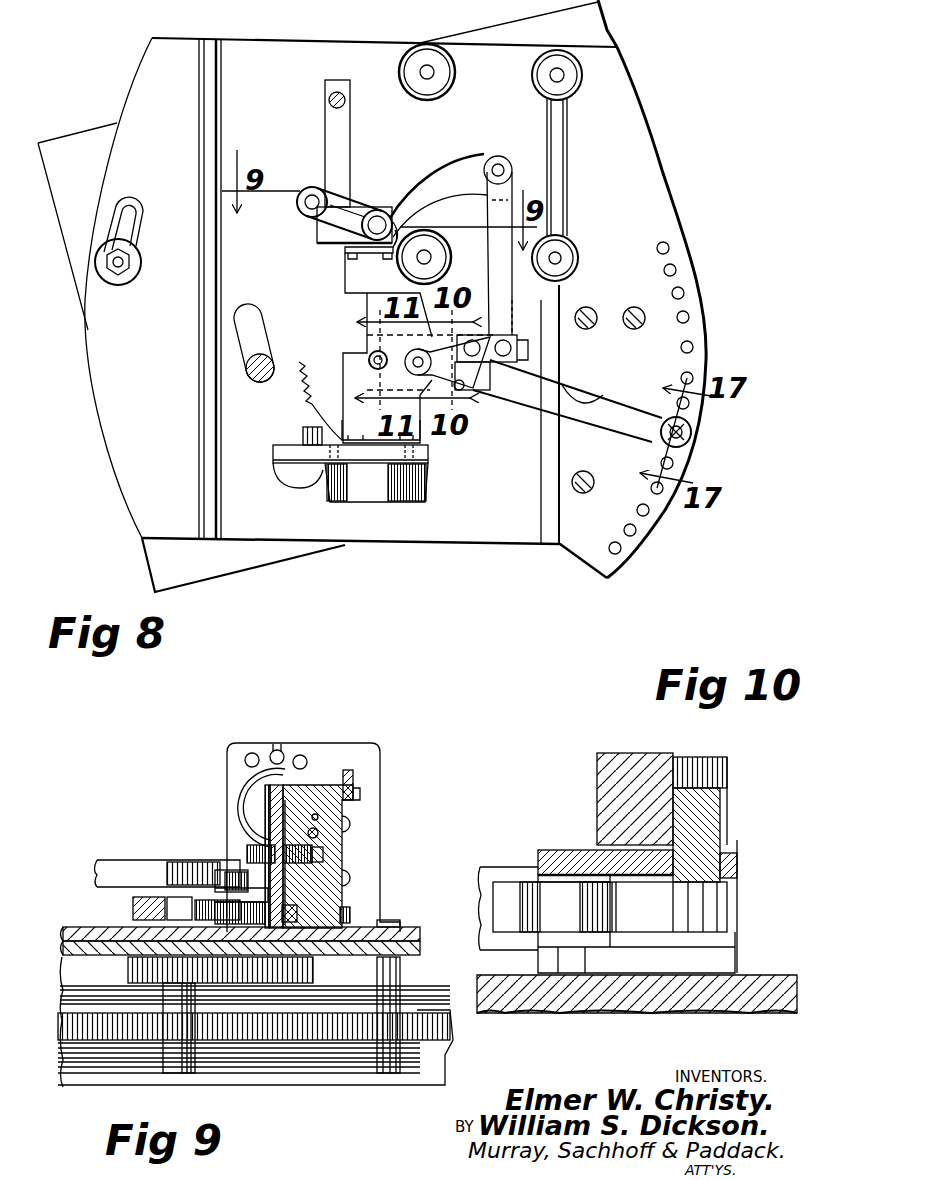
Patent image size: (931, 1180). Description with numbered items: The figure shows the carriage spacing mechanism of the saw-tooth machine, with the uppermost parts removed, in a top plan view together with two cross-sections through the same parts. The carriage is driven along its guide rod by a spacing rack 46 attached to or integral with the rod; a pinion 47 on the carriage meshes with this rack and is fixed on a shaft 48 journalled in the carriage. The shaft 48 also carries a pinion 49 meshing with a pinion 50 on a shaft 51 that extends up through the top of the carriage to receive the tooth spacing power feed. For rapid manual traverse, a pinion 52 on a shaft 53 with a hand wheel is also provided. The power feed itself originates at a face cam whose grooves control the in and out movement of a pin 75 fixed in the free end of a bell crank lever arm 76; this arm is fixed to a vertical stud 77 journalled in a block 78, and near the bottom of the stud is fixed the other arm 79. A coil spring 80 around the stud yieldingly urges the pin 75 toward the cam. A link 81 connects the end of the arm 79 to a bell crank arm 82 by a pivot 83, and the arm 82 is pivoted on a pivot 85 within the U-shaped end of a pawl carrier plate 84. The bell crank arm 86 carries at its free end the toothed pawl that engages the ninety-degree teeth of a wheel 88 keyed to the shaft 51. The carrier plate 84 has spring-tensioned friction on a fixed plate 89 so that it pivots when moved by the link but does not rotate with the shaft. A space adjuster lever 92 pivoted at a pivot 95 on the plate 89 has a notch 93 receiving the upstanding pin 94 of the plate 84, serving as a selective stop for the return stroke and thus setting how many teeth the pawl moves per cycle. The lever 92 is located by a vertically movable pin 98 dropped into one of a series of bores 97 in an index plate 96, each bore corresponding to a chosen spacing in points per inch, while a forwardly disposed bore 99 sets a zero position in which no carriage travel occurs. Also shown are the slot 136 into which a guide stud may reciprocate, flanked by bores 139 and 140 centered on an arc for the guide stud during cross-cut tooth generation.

In FIG. 9, the spacing rack 46 is at (72, 1014).
In FIG. 9, the pinion 47 is at (165, 1035).
In FIG. 9, the shaft 48 is at (197, 1063).
In FIG. 9, the pinion 49 is at (128, 975).
In FIG. 9, the pinion 50 is at (315, 973).
In FIG. 8, the shaft 51 is at (375, 353).
In FIG. 9, the pinion 52 is at (397, 1053).
In FIG. 8, the shaft 53 is at (263, 355).
In FIG. 9, the shaft 53 is at (398, 982).
In FIG. 8, the pin 75 is at (313, 193).
In FIG. 9, the pin 75 is at (350, 772).
In FIG. 8, the bell crank lever arm 76 is at (330, 203).
In FIG. 9, the bell crank lever arm 76 is at (312, 785).
In FIG. 8, the vertical stud 77 is at (372, 219).
In FIG. 9, the vertical stud 77 is at (277, 815).
In FIG. 8, the block 78 is at (317, 237).
In FIG. 8, the arm 79 is at (450, 175).
In FIG. 9, the arm 79 is at (297, 902).
In FIG. 8, the coil spring 80 is at (345, 250).
In FIG. 9, the coil spring 80 is at (275, 850).
In FIG. 8, the link 81 is at (503, 195).
In FIG. 10, the link 81 is at (480, 865).
In FIG. 8, the bell crank arm 82 is at (495, 335).
In FIG. 10, the bell crank arm 82 is at (525, 912).
In FIG. 8, the pivot 83 is at (515, 340).
In FIG. 8, the pawl carrier plate 84 is at (487, 373).
In FIG. 10, the pawl carrier plate 84 is at (585, 850).
In FIG. 8, the pivot 85 is at (472, 345).
In FIG. 10, the pivot 85 is at (556, 853).
In FIG. 10, the bell crank arm 86 is at (643, 915).
In FIG. 8, the wheel 88 is at (300, 395).
In FIG. 10, the fixed plate 89 is at (710, 915).
In FIG. 8, the space adjuster lever 92 is at (615, 408).
In FIG. 10, the space adjuster lever 92 is at (627, 753).
In FIG. 10, the notch 93 is at (710, 775).
In FIG. 8, the upstanding pin 94 is at (465, 390).
In FIG. 10, the upstanding pin 94 is at (708, 815).
In FIG. 8, the pivot 95 is at (413, 362).
In FIG. 8, the index plate 96 is at (633, 267).
In FIG. 8, the bores 97 is at (684, 293).
In FIG. 8, the vertically movable pin 98 is at (692, 432).
In FIG. 8, the forwardly disposed bore 99 is at (620, 552).
In FIG. 9, the slot 136 is at (275, 749).
In FIG. 9, the bore 139 is at (233, 750).
In FIG. 9, the bore 140 is at (302, 754).